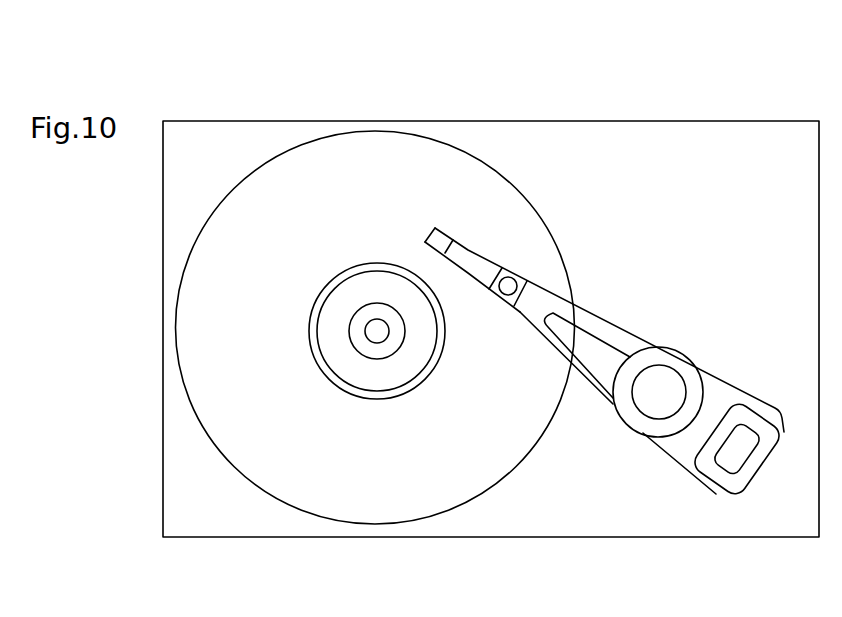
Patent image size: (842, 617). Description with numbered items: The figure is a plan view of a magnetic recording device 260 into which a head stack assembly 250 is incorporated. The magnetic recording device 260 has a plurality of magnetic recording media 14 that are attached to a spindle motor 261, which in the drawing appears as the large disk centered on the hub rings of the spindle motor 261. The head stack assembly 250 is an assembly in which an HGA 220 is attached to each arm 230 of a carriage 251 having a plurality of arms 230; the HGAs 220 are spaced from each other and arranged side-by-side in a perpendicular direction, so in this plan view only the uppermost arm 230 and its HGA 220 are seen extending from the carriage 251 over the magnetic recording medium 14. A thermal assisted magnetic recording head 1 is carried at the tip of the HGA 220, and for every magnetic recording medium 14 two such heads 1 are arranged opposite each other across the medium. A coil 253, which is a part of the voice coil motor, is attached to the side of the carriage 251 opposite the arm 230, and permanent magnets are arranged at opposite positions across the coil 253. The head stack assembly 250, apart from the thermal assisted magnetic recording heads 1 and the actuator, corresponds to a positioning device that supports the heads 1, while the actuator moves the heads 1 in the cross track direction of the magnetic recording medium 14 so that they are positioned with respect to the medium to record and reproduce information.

The thermal assisted magnetic recording head 1 is at (444, 226).
The magnetic recording medium 14 is at (302, 512).
The HGA 220 is at (480, 285).
The arm 230 is at (597, 388).
The head stack assembly 250 is at (664, 470).
The carriage 251 is at (668, 348).
The coil 253 is at (763, 468).
The magnetic recording device 260 is at (491, 282).
The spindle motor 261 is at (377, 343).